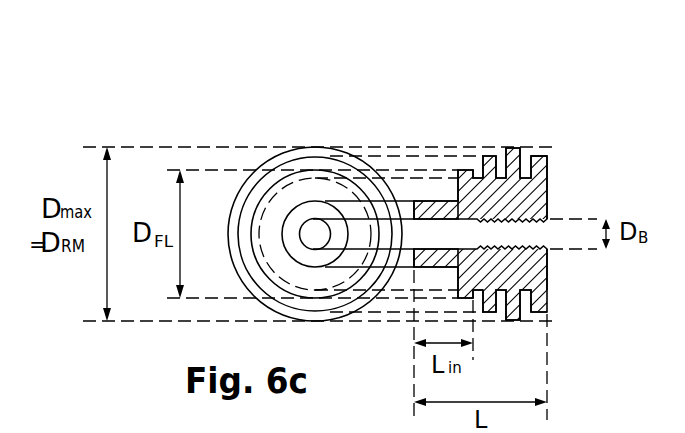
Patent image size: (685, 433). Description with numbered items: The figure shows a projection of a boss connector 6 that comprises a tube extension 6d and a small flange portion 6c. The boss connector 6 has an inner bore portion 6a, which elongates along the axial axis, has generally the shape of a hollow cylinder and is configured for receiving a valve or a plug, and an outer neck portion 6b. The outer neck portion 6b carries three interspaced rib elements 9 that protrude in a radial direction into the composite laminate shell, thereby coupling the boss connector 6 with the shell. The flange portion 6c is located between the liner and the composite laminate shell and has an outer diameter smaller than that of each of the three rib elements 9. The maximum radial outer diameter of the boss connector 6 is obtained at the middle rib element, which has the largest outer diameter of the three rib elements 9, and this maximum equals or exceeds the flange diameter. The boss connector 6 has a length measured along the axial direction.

The boss connector 6 is at (275, 108).
The inner bore portion 6a is at (556, 213).
The outer neck portion 6b is at (556, 178).
The flange portion 6c is at (467, 178).
The tube extension 6d is at (433, 201).
The rib elements 9 is at (543, 152).